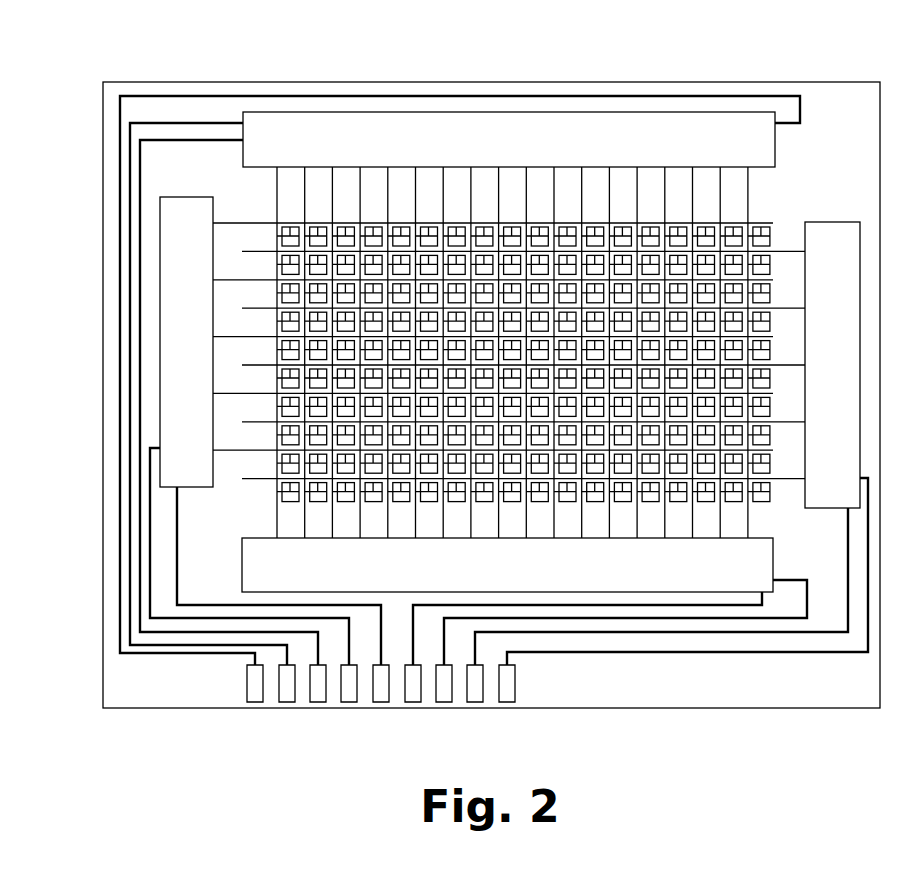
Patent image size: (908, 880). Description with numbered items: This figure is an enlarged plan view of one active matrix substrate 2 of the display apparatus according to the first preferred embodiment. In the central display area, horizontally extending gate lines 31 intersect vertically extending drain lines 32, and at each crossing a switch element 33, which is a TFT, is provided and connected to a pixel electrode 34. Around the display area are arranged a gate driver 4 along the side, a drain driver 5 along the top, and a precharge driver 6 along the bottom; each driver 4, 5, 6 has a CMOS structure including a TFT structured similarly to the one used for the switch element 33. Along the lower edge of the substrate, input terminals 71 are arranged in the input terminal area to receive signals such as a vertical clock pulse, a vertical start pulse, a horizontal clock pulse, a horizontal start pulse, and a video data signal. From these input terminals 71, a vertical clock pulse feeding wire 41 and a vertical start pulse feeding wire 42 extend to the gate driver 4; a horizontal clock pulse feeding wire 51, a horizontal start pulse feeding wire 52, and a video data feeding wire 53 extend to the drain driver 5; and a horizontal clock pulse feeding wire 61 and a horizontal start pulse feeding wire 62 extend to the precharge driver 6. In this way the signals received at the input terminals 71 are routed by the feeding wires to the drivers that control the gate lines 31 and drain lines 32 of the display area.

The active matrix substrate 2 is at (872, 697).
The gate driver 4 is at (165, 225).
The drain driver 5 is at (724, 120).
The precharge driver 6 is at (740, 582).
The gate line 31 is at (232, 218).
The drain line 32 is at (276, 195).
The switch element 33 is at (308, 225).
The pixel electrode 34 is at (347, 235).
The vertical clock pulse feeding wire 41 is at (150, 548).
The vertical start pulse feeding wire 42 is at (172, 595).
The horizontal clock pulse feeding wire 51 is at (138, 305).
The horizontal start pulse feeding wire 52 is at (130, 355).
The video data feeding wire 53 is at (115, 417).
The horizontal clock pulse feeding wire 61 is at (596, 607).
The horizontal start pulse feeding wire 62 is at (678, 622).
The input terminal 71 is at (508, 695).